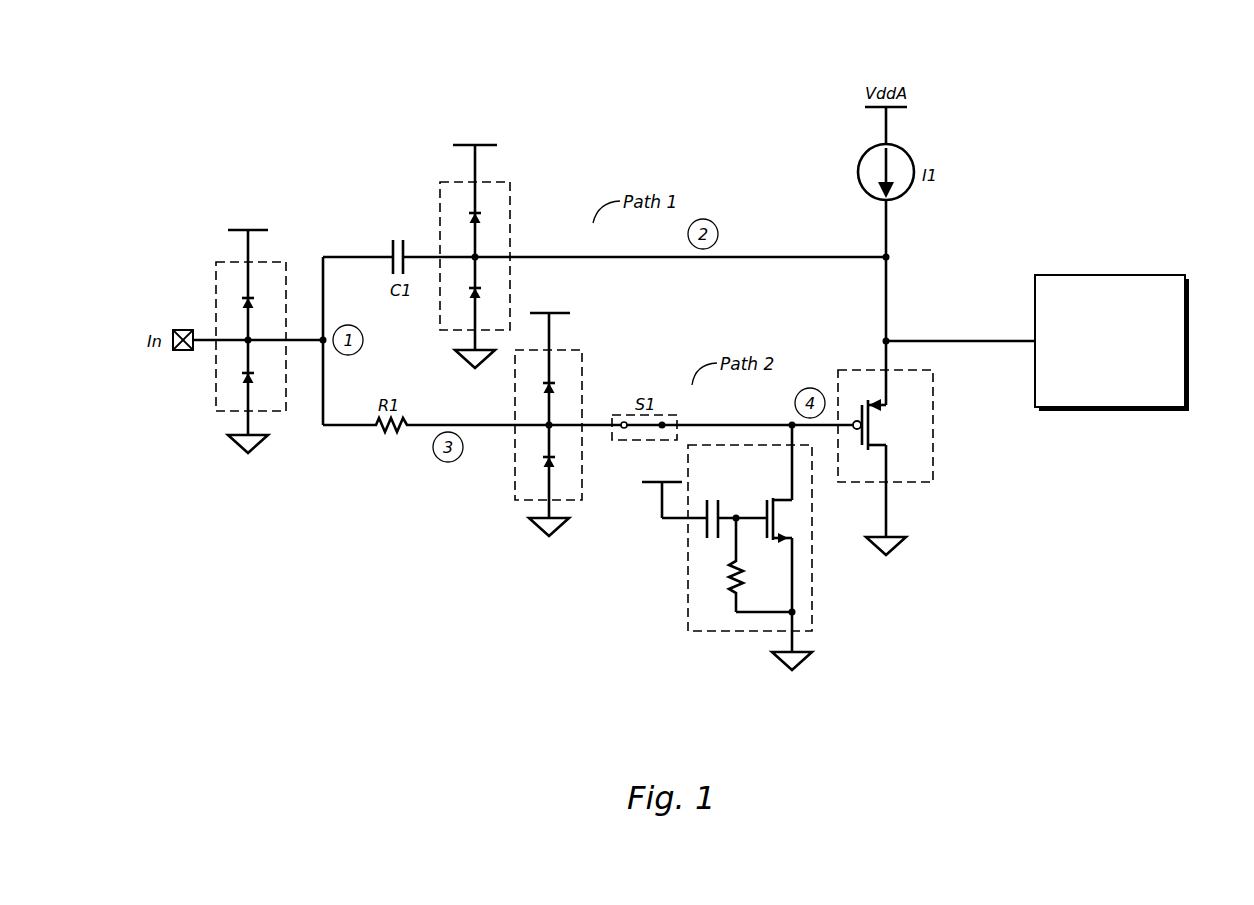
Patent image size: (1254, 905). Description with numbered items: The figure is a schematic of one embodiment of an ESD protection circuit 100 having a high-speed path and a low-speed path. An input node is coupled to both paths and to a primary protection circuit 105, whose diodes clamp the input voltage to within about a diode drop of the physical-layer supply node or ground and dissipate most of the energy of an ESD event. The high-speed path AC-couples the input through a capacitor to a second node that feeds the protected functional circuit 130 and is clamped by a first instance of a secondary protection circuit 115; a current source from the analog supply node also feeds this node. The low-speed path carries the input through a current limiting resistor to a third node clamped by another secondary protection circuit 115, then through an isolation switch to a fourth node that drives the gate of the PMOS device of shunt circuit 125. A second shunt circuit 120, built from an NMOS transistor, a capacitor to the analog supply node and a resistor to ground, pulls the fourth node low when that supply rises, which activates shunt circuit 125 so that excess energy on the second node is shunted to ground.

The ESD protection circuit 100 is at (595, 60).
The primary protection circuit 105 is at (282, 260).
The secondary protection circuit 115 is at (508, 182).
The shunt circuit 120 is at (688, 631).
The shunt circuit 125 is at (933, 482).
The functional circuit 130 is at (1112, 343).